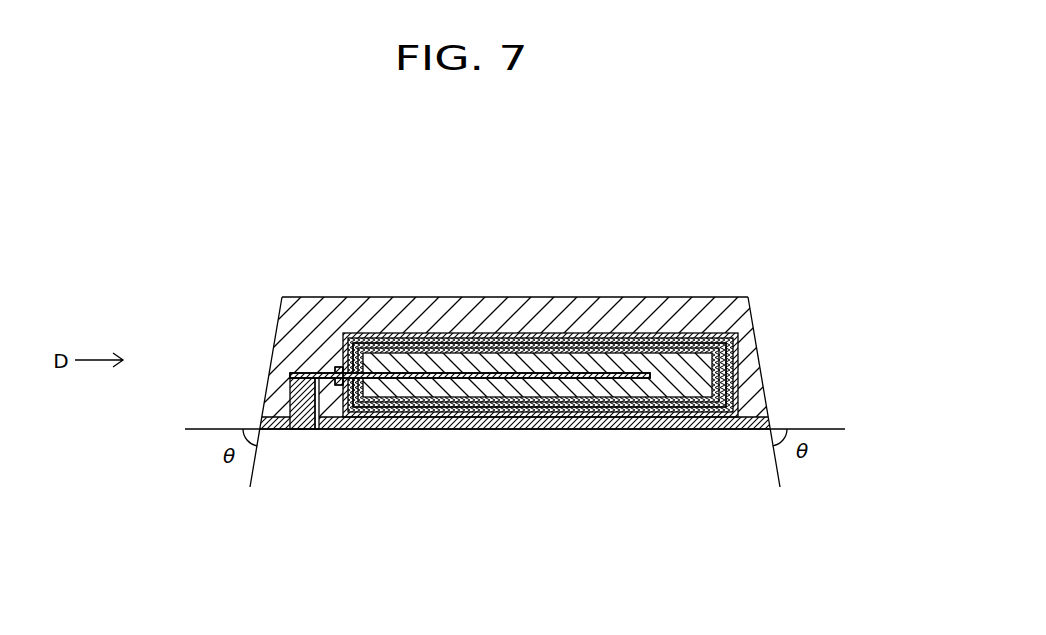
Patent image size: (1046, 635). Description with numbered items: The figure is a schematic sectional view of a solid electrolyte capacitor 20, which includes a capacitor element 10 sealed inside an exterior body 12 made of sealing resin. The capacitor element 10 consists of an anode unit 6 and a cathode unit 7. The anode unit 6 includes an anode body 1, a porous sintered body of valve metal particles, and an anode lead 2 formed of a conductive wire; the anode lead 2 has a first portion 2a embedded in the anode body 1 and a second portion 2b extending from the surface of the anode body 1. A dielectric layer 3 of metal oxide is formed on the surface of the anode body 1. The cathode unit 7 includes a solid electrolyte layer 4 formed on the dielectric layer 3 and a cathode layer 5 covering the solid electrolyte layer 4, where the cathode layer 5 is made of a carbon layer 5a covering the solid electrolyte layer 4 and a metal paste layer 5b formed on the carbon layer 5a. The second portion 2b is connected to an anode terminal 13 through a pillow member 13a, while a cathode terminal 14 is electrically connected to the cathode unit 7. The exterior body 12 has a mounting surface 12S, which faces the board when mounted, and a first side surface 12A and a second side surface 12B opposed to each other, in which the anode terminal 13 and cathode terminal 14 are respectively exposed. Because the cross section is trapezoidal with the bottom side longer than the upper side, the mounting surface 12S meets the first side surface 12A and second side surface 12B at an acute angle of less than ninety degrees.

The anode body 1 is at (541, 337).
The anode lead 2 is at (507, 373).
The first portion 2a is at (582, 378).
The second portion 2b is at (303, 377).
The dielectric layer 3 is at (463, 350).
The solid electrolyte layer 4 is at (435, 370).
The cathode layer 5 is at (407, 252).
The carbon layer 5a is at (395, 355).
The metal paste layer 5b is at (352, 362).
The anode unit 6 is at (447, 208).
The cathode unit 7 is at (332, 208).
The capacitor element 10 is at (505, 163).
The exterior body 12 is at (292, 317).
The first side surface 12A is at (262, 367).
The second side surface 12B is at (771, 367).
The mounting surface 12S is at (457, 441).
The anode terminal 13 is at (293, 430).
The pillow member 13a is at (312, 430).
The cathode terminal 14 is at (683, 428).
The solid electrolyte capacitor 20 is at (718, 255).